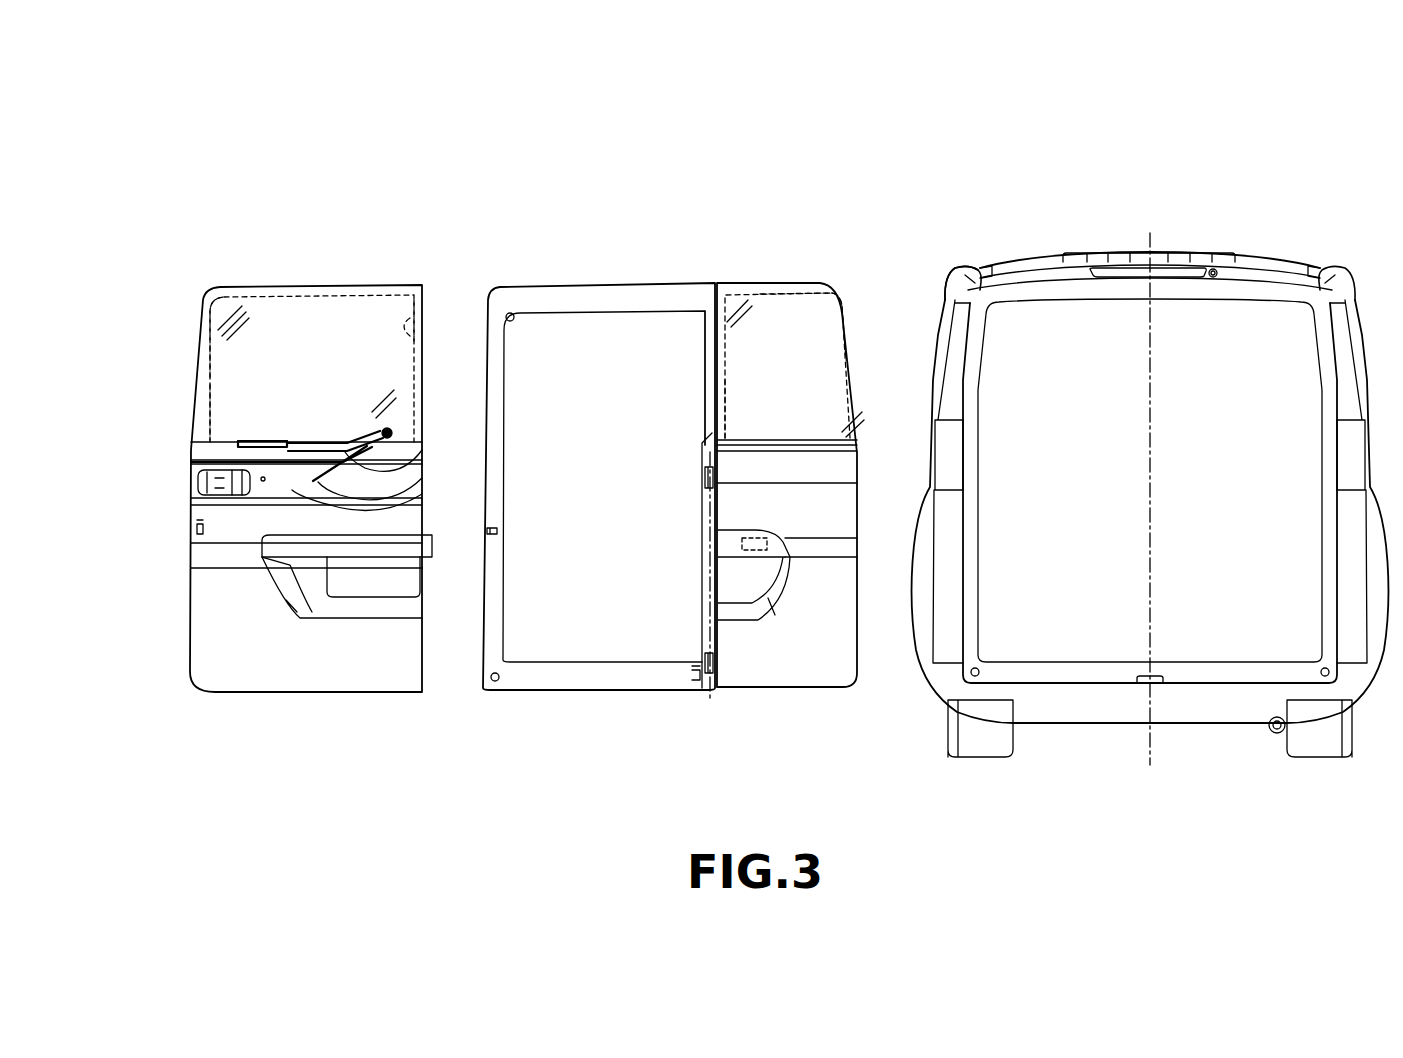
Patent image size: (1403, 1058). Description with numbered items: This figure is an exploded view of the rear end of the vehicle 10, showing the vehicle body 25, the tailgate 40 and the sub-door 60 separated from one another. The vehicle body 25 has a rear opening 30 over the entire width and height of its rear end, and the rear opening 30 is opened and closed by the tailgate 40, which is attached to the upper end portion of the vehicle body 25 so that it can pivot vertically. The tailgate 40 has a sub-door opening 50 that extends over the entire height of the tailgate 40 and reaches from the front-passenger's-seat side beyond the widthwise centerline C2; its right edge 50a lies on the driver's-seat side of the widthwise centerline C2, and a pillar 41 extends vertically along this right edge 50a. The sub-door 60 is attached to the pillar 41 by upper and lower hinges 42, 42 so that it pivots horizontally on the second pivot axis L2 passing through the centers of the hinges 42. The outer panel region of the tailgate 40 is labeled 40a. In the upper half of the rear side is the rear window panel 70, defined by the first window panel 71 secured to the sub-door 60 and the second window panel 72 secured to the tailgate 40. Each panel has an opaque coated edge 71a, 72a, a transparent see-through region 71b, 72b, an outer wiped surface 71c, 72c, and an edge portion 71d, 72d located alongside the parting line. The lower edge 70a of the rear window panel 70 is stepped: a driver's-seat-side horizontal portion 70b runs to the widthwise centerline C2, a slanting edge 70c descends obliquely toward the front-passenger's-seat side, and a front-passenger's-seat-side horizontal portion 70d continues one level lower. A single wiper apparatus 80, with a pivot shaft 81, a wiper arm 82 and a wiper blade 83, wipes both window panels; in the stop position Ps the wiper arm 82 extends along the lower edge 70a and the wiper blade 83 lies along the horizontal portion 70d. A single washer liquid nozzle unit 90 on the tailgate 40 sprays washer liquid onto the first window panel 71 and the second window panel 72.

The vehicle 10 is at (1305, 186).
The vehicle body 25 is at (943, 283).
The rear opening 30 is at (1213, 500).
The tailgate 40 is at (755, 285).
The rear door outer panel 40a is at (785, 631).
The pillar 41 is at (718, 360).
The hinges 42 is at (703, 478).
The sub-door opening 50 is at (627, 577).
The right edge 50a is at (705, 332).
The sub-door 60 is at (205, 302).
The rear window panel 70 is at (737, 186).
The lower edge 70a is at (575, 358).
The driver's-seat-side horizontal portion 70b is at (427, 450).
The slanting edge 70c is at (423, 478).
The front-passenger's-seat-side horizontal portion 70d is at (423, 494).
The first window panel 71 is at (413, 287).
The edge 71a is at (207, 327).
The transparent region 71b is at (223, 368).
The outer surface 71c is at (226, 412).
The edge portion 71d is at (420, 306).
The second window panel 72 is at (735, 285).
The edge 72a is at (792, 292).
The transparent region 72b is at (806, 303).
The outer surface 72c is at (812, 333).
The edge portion 72d is at (748, 398).
The wiper apparatus 80 is at (237, 186).
The pivot shaft 81 is at (387, 428).
The wiper arm 82 is at (358, 443).
The wiper blade 83 is at (275, 442).
The washer liquid nozzle unit 90 is at (1210, 270).
The stop position Ps is at (238, 442).
The second pivot axis L2 is at (714, 696).
The widthwise centerline C2 is at (1150, 735).